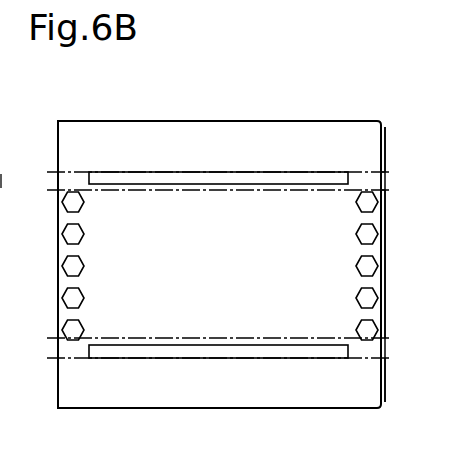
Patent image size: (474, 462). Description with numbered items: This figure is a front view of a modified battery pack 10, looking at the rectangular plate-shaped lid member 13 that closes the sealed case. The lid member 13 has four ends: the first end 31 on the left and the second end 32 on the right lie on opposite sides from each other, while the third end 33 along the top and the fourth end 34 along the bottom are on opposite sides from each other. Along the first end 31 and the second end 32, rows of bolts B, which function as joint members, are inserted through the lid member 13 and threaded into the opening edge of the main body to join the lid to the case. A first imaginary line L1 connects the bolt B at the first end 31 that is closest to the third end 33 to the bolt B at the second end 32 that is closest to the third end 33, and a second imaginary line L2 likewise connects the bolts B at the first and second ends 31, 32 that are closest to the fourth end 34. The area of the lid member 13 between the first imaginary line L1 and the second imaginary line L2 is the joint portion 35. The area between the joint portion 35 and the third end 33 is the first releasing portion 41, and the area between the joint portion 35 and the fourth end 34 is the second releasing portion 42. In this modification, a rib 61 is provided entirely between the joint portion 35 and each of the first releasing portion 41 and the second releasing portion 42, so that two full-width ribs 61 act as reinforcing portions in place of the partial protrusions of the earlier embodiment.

The battery pack 10 is at (373, 92).
The lid member 13 is at (305, 130).
The third end 33 is at (127, 120).
The fourth end 34 is at (135, 409).
The first end 31 is at (57, 247).
The first releasing portion 41 is at (388, 128).
The second end 32 is at (384, 179).
The joint portion 35 is at (388, 191).
The second releasing portion 42 is at (388, 359).
The rib 61 is at (192, 176).
The first imaginary line L1 is at (165, 192).
The second imaginary line L2 is at (256, 337).
The bolts B is at (86, 194).